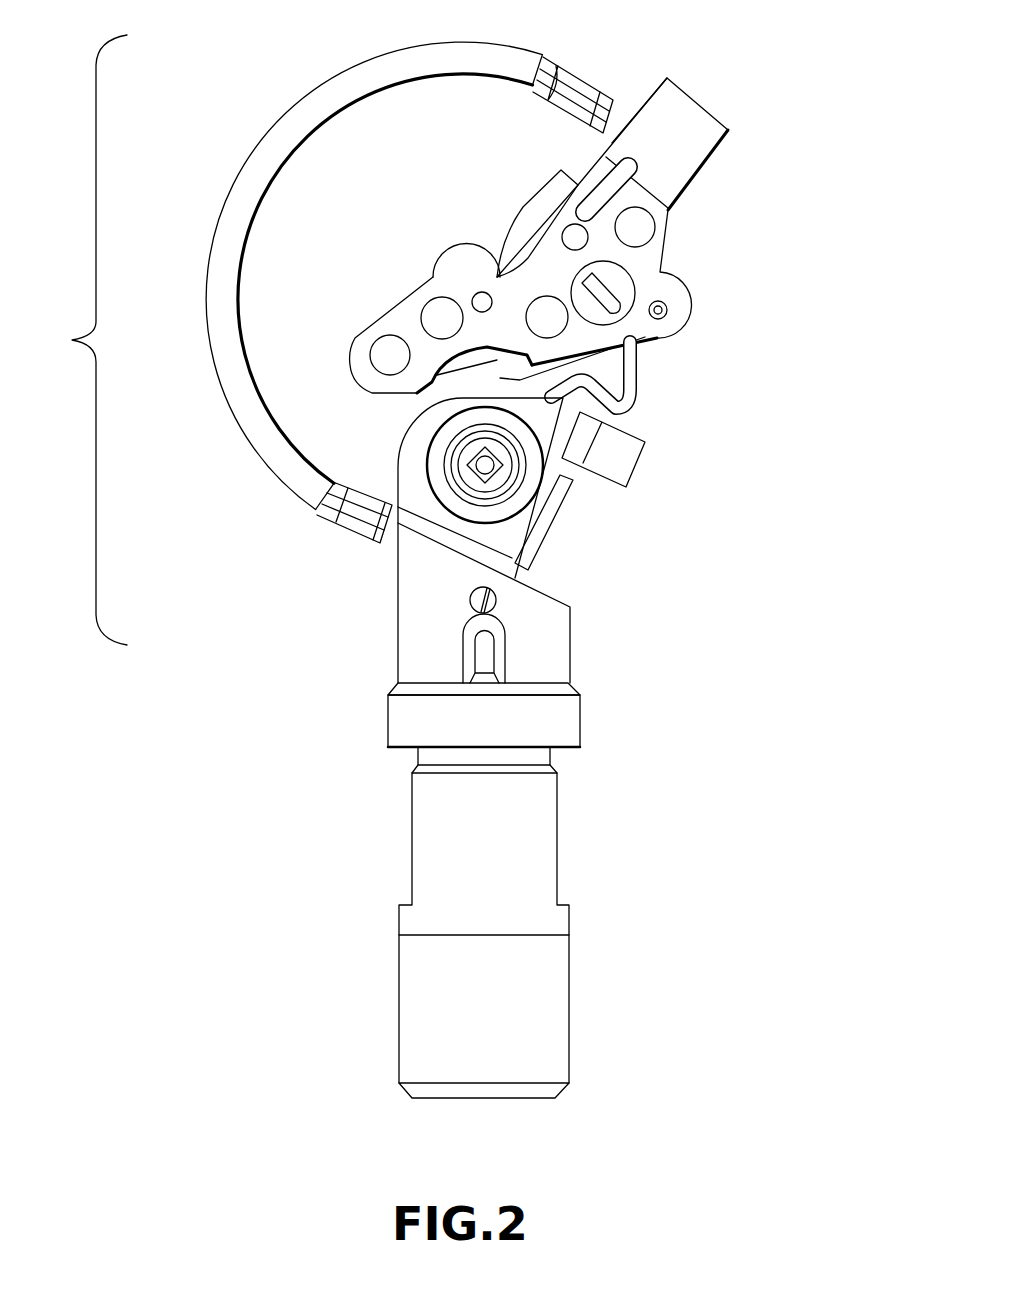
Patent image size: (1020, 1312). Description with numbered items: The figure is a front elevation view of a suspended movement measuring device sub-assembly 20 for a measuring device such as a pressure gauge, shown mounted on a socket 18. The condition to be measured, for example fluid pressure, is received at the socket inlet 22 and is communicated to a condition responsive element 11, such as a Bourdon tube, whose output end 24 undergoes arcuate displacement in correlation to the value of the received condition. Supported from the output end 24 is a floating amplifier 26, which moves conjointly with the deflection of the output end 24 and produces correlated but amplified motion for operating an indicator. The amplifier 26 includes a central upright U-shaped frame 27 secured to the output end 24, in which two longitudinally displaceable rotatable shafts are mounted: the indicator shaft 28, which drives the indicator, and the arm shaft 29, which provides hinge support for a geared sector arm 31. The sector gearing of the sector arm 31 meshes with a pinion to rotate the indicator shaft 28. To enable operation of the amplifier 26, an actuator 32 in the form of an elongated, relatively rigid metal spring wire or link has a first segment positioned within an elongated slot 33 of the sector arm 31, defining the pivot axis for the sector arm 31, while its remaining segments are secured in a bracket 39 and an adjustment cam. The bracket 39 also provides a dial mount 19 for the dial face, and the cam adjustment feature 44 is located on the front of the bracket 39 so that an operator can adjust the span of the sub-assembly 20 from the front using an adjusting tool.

The condition responsive element 11 is at (338, 73).
The socket 18 is at (399, 987).
The dial mount 19 is at (493, 608).
The suspended movement measuring device sub-assembly 20 is at (74, 338).
The socket inlet 22 is at (460, 1098).
The output end 24 is at (628, 107).
The amplifier 26 is at (688, 218).
The frame 27 is at (667, 245).
The indicator shaft 28 is at (476, 294).
The arm shaft 29 is at (667, 312).
The sector arm 31 is at (537, 190).
The actuator 32 is at (647, 380).
The elongated slot 33 is at (613, 277).
The bracket 39 is at (398, 603).
The cam adjustment feature 44 is at (487, 467).